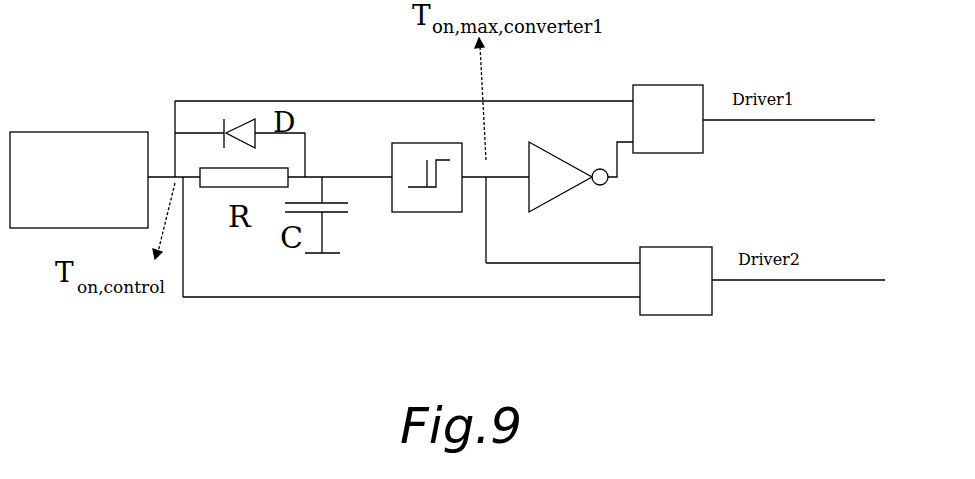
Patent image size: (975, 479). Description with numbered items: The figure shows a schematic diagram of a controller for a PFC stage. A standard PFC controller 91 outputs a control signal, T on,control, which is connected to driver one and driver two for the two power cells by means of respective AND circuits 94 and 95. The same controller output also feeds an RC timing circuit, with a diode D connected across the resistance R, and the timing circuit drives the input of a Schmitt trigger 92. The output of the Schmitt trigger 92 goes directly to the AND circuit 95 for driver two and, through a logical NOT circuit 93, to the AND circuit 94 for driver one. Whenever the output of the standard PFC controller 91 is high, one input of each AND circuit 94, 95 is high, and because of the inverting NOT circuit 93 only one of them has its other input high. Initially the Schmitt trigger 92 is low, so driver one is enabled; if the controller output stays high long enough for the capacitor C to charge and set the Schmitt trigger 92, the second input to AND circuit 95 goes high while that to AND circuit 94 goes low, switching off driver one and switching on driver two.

The standard PFC controller 91 is at (79, 180).
The Schmitt trigger 92 is at (403, 152).
The logical NOT circuit 93 is at (552, 163).
The AND circuit 94 is at (703, 146).
The AND circuit 95 is at (710, 247).